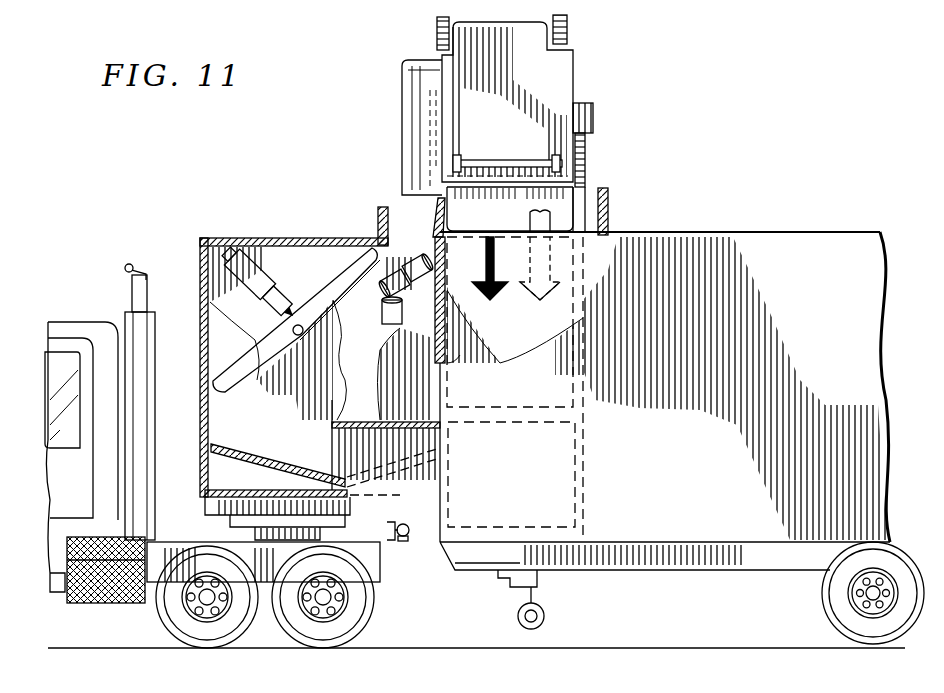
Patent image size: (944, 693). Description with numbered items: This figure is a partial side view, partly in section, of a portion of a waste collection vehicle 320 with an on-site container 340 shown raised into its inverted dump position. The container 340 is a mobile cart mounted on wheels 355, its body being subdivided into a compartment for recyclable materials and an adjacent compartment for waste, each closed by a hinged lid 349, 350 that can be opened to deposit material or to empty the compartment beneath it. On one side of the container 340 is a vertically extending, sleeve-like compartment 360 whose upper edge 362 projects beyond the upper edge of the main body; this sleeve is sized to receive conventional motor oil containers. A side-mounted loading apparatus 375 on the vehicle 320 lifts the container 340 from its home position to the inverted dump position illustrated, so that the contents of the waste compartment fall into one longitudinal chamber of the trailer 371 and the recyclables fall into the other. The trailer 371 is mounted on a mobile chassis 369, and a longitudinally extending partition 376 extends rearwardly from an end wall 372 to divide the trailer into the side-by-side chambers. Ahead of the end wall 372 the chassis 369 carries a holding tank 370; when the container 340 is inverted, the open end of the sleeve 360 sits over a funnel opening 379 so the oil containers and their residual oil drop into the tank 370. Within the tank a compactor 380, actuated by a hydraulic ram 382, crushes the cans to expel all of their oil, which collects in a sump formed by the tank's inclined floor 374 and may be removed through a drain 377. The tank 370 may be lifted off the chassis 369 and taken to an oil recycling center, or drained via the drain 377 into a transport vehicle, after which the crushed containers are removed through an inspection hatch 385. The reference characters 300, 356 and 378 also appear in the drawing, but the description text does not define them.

The compactor unit 300 is at (580, 66).
The collection vehicle 320 is at (237, 178).
The on-site container 340 is at (577, 82).
The lid 349 is at (590, 195).
The lid 350 is at (510, 209).
The wheels 355 is at (436, 26).
The bar 356 is at (506, 160).
The sleeve-like compartment 360 is at (432, 150).
The upper edge 362 is at (440, 230).
The mobile chassis 369 is at (588, 557).
The holding tank 370 is at (665, 230).
The trailer 371 is at (798, 247).
The end wall 372 is at (460, 355).
The inclined floor 374 is at (296, 436).
The side-mounted loading apparatus 375 is at (588, 158).
The longitudinally extending partition 376 is at (515, 322).
The drain 377 is at (403, 537).
The bin 378 is at (232, 237).
The funnel opening 379 is at (397, 224).
The compactor 380 is at (253, 356).
The hydraulic ram 382 is at (276, 282).
The inspection hatch 385 is at (442, 432).